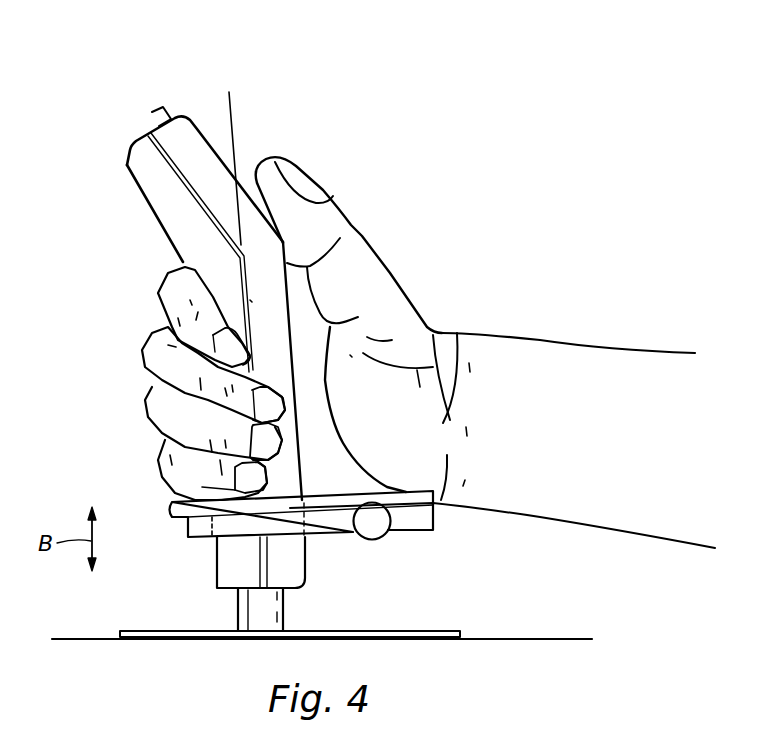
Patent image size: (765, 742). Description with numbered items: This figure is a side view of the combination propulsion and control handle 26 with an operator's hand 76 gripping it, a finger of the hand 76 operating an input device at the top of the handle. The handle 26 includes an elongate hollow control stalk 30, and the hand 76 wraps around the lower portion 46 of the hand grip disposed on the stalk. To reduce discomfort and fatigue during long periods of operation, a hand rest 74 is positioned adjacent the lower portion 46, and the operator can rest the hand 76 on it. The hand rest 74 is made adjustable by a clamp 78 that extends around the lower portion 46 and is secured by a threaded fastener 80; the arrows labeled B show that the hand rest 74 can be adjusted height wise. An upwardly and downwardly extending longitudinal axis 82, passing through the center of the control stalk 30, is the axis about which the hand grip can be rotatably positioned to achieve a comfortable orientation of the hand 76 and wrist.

The combination propulsion and control handle 26 is at (178, 110).
The longitudinal axis 82 is at (231, 113).
The hand 76 is at (436, 322).
The clamp 78 is at (238, 520).
The hand rest 74 is at (440, 513).
The threaded fastener 80 is at (390, 520).
The lower portion 46 is at (306, 567).
The control stalk 30 is at (284, 613).